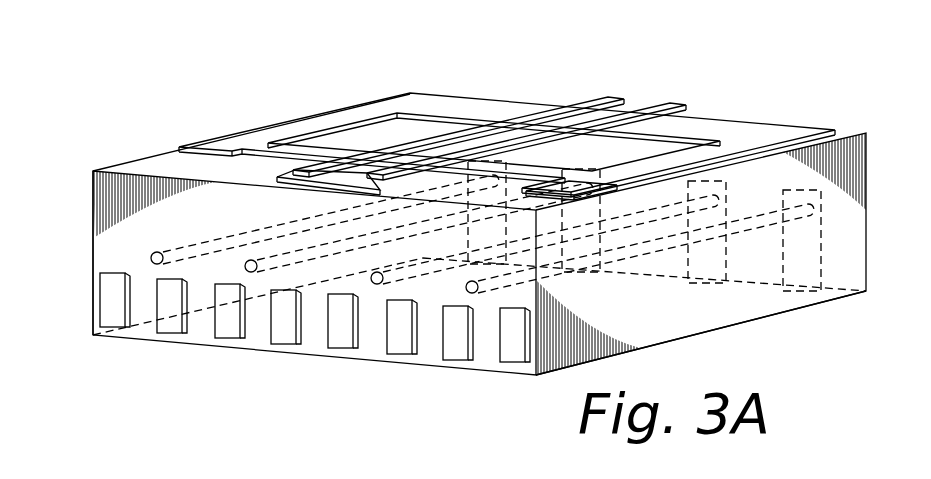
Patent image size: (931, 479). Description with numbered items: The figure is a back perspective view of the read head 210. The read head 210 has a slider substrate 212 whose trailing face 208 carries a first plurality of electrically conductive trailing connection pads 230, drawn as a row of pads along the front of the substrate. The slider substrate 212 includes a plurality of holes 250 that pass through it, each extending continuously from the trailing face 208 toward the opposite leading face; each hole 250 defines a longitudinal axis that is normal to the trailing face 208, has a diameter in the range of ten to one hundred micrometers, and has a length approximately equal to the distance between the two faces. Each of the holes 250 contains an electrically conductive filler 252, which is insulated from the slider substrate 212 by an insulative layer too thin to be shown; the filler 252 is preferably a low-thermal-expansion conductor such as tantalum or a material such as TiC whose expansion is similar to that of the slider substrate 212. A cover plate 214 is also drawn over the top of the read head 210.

The read head 210 is at (770, 88).
The trailing face 208 is at (115, 257).
The slider substrate 212 is at (688, 311).
The cover plate 214 is at (417, 133).
The electrically conductive trailing connection pads 230 is at (280, 318).
The holes 250 is at (372, 274).
The electrically conductive filler 252 is at (466, 284).